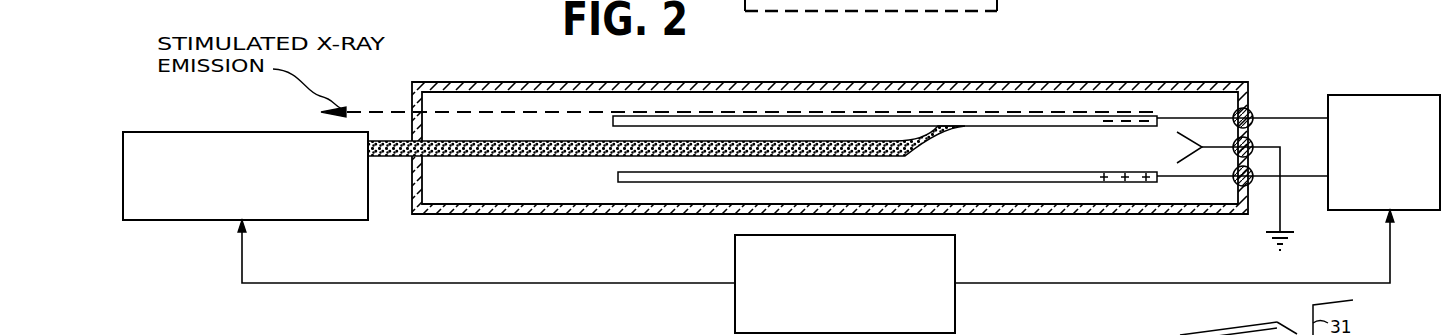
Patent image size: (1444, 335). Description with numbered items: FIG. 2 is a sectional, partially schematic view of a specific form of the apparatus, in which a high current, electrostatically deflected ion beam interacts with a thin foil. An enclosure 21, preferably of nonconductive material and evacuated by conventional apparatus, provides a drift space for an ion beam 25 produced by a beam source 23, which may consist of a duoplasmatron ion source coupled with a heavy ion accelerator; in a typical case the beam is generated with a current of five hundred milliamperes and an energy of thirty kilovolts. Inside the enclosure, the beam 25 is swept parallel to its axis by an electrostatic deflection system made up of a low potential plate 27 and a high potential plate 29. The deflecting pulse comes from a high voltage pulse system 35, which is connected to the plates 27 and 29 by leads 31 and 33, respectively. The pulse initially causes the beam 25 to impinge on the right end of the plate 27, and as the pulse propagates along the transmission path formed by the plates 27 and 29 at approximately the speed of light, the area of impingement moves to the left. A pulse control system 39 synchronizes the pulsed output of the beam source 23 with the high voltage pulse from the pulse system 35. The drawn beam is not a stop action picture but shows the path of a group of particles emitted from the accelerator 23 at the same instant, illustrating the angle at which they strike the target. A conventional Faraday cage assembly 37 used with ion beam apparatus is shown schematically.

The enclosure 21 is at (750, 82).
The beam source 23 is at (248, 104).
The ion beam 25 is at (473, 158).
The low potential plate 27 is at (1085, 116).
The high potential plate 29 is at (1077, 183).
The lead 31 is at (1188, 117).
The lead 33 is at (1198, 183).
The high voltage pulse system 35 is at (1395, 95).
The Faraday cage assembly 37 is at (1215, 147).
The pulse control system 39 is at (955, 300).